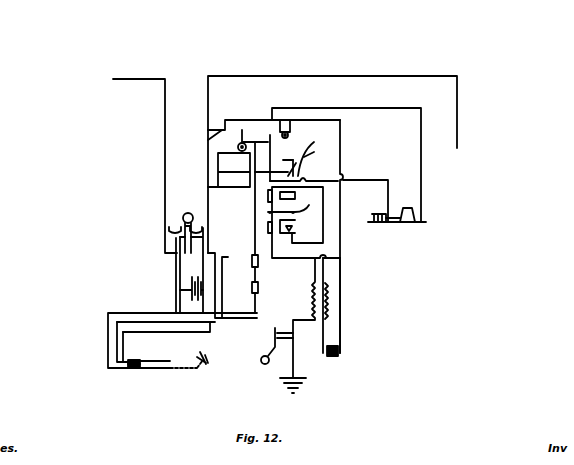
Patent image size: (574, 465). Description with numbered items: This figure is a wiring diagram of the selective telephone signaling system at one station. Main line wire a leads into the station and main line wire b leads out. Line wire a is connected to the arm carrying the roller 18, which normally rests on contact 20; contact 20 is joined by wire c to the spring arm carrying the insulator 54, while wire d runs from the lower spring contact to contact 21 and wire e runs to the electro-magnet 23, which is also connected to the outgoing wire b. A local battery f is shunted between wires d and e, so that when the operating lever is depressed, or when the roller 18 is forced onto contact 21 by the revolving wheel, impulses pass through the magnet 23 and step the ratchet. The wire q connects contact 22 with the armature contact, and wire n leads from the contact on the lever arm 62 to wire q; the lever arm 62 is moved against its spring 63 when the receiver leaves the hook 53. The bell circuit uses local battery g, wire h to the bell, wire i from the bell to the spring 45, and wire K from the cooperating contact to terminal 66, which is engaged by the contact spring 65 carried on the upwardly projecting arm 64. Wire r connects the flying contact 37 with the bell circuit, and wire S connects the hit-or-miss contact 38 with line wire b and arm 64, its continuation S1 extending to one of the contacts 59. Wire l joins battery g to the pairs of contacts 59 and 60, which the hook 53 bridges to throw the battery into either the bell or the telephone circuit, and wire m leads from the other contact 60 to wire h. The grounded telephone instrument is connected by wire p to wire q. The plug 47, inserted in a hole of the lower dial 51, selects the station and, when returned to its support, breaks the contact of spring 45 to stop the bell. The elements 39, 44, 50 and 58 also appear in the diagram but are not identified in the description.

The main line wire a is at (163, 117).
The main line wire b is at (288, 77).
The wire r is at (249, 119).
The wire i is at (362, 110).
The electro-magnet 23 is at (217, 167).
The fly contact 37 is at (214, 138).
The spring contact 38 is at (279, 134).
The contact 39 is at (238, 147).
The wire q is at (254, 226).
The wire S is at (271, 152).
The continuation of wire s S1 is at (271, 174).
The lever arm 62 is at (316, 155).
The spring 63 is at (312, 155).
The upwardly projecting arm 64 is at (283, 160).
The contact spring 65 is at (300, 159).
The terminal 66 is at (292, 173).
The wire n is at (310, 181).
The wire K is at (355, 180).
The armature 44 is at (399, 212).
The spring 45 is at (392, 222).
The plug 47 is at (370, 217).
The wire e is at (209, 203).
The roller 18 is at (188, 213).
The contact 20 is at (202, 222).
The contact 21 is at (168, 228).
The contact 22 is at (175, 240).
The local battery f is at (192, 284).
The wire c is at (223, 287).
The wire d is at (110, 310).
The fuse 50 is at (158, 361).
The lower dial 51 is at (152, 368).
The telephone hook 53 is at (195, 367).
The insulator 54 is at (207, 361).
The wire m is at (284, 252).
The contact arm 58 is at (292, 202).
The contacts 59 is at (288, 194).
The contacts 60 is at (290, 222).
The wire l is at (350, 270).
The wire h is at (344, 305).
The local battery g is at (336, 357).
The wire p is at (288, 325).